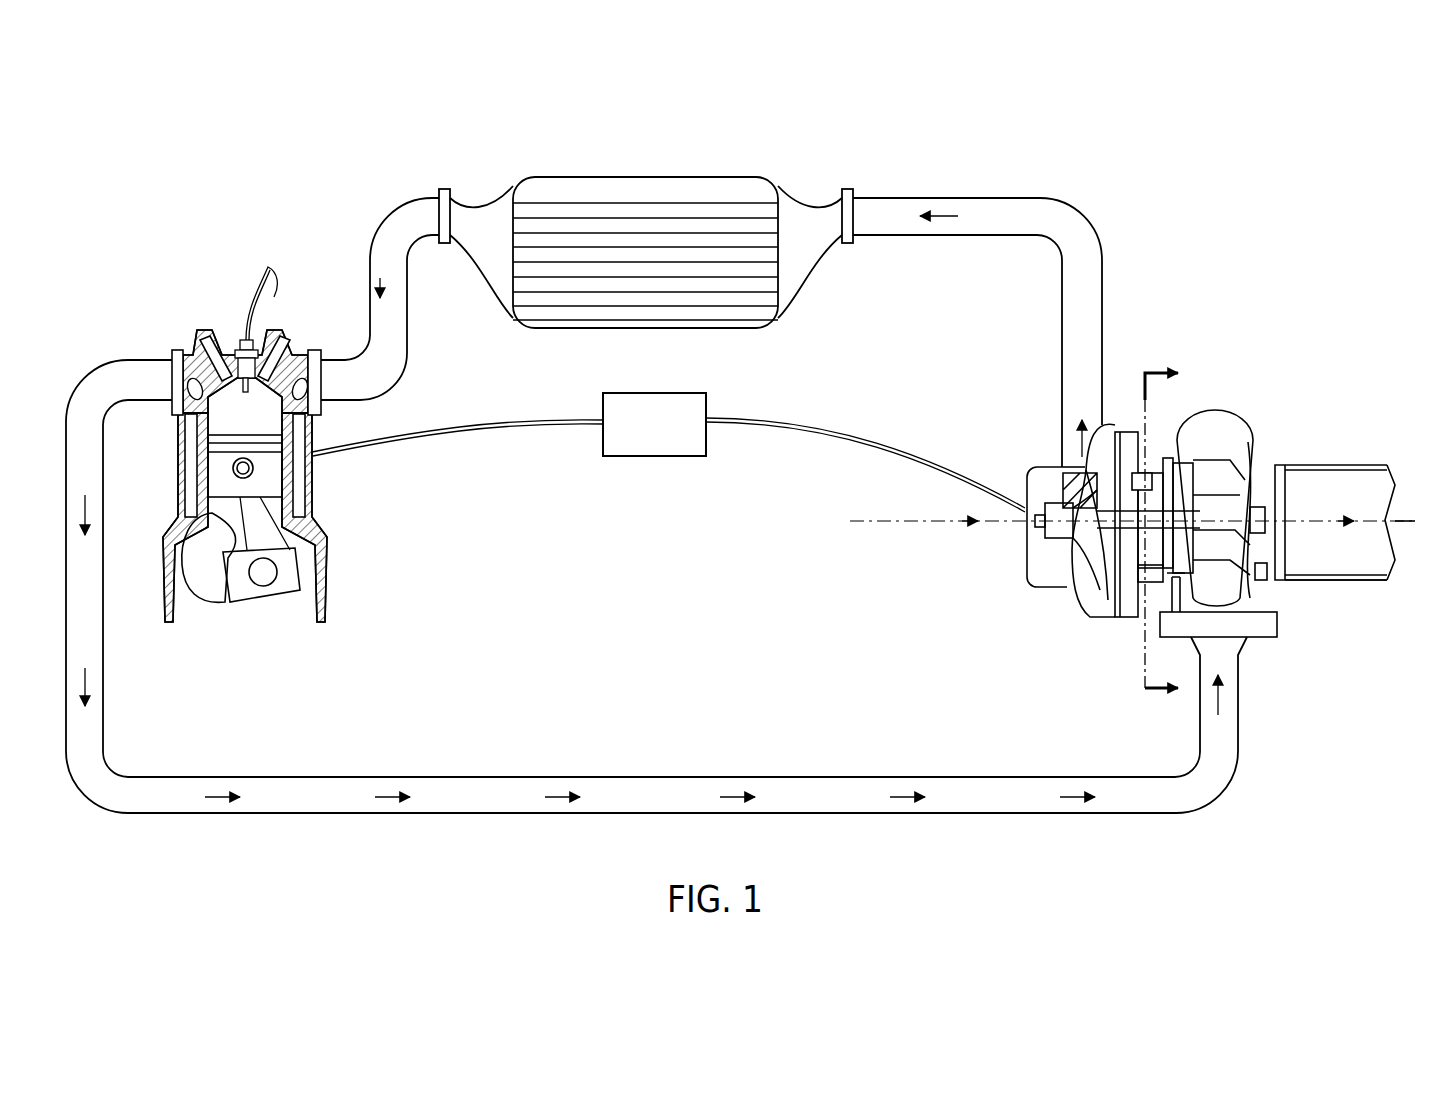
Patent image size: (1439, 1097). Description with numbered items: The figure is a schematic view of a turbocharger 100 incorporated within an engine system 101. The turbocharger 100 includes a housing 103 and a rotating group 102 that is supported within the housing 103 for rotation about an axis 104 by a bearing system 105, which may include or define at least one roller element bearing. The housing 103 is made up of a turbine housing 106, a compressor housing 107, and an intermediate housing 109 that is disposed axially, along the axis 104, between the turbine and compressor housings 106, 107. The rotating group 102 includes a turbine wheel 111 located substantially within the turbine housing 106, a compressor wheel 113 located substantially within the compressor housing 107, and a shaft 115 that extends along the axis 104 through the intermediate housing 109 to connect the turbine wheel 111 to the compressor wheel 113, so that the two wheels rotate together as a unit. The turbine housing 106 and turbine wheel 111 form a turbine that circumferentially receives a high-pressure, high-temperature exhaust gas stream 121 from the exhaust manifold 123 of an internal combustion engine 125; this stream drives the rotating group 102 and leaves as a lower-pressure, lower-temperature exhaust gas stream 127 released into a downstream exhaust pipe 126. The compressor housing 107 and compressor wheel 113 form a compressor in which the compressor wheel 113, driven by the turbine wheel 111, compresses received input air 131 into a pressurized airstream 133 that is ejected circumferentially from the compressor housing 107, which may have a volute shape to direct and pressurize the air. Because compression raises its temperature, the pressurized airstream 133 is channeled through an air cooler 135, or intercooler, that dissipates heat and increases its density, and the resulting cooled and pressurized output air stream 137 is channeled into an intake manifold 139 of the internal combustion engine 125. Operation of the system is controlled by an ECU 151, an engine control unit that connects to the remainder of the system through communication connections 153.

The turbocharger 100 is at (1225, 337).
The engine system 101 is at (213, 175).
The rotating group 102 is at (1127, 529).
The housing 103 is at (1127, 427).
The axis 104 is at (1397, 522).
The bearing system 105 is at (1162, 535).
The turbine housing 106 is at (1245, 442).
The compressor housing 107 is at (1066, 587).
The intermediate housing 109 is at (1158, 478).
The turbine wheel 111 is at (1235, 508).
The compressor wheel 113 is at (1071, 552).
The shaft 115 is at (1172, 515).
The exhaust gas stream 121 is at (738, 797).
The exhaust manifold 123 is at (193, 366).
The internal combustion engine 125 is at (278, 483).
The downstream exhaust pipe 126 is at (1342, 463).
The lower-pressure and lower-temperature exhaust gas stream 127 is at (1318, 520).
The input air 131 is at (933, 528).
The pressurized airstream 133 is at (1078, 443).
The air cooler 135 is at (643, 203).
The output air stream 137 is at (382, 280).
The intake manifold 139 is at (306, 396).
The ECU 151 is at (651, 458).
The communication connections 153 is at (797, 437).